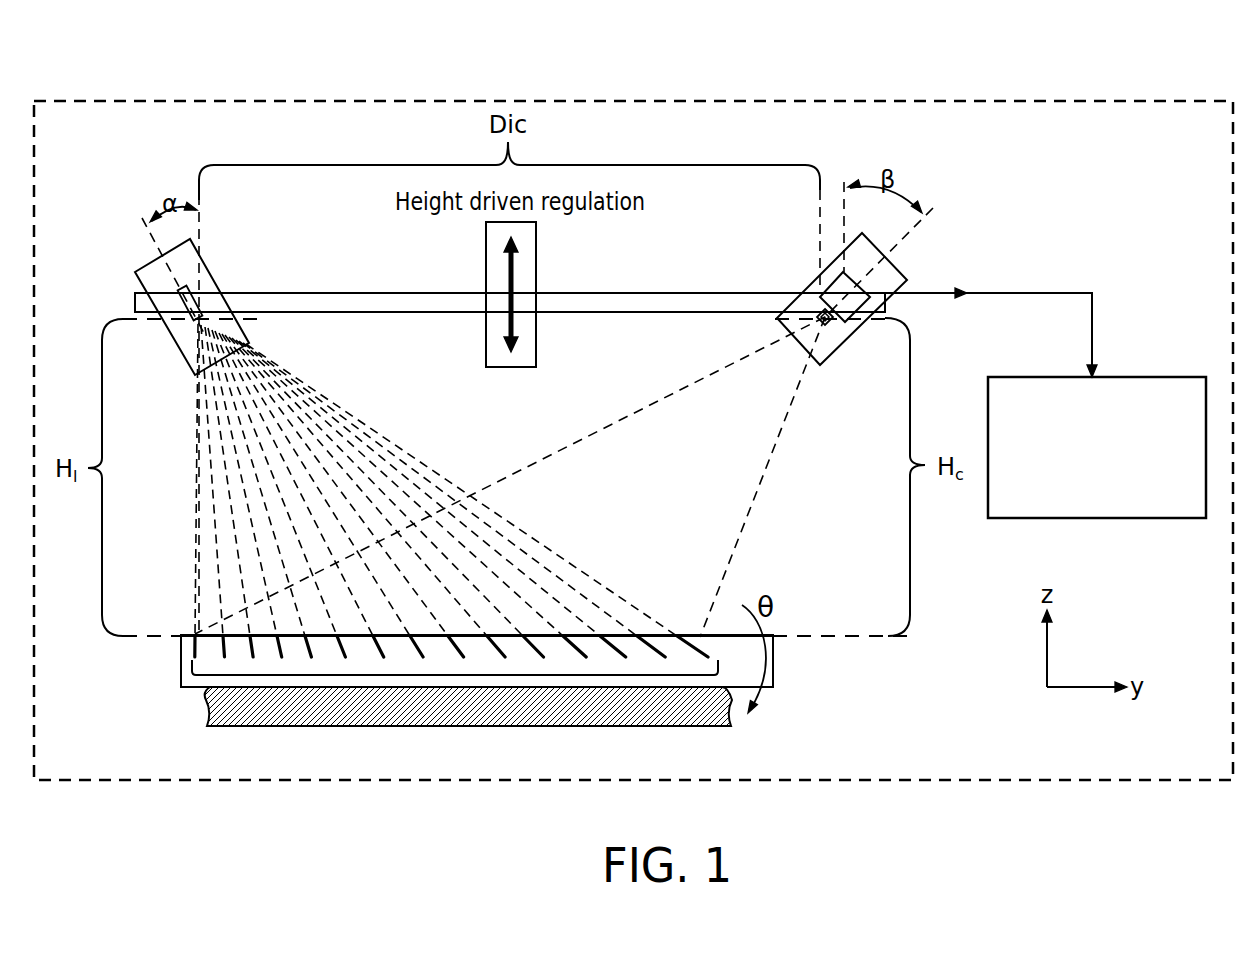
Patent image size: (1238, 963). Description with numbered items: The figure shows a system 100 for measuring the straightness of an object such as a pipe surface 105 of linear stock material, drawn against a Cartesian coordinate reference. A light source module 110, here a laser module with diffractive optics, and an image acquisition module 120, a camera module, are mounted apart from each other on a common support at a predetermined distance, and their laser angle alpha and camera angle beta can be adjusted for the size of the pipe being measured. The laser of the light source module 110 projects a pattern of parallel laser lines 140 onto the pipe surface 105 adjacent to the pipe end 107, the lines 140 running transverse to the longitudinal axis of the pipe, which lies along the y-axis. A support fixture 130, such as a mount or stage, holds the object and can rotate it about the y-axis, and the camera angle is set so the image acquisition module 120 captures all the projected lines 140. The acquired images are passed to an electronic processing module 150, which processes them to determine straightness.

The system for measuring straightness 100 is at (722, 82).
The pipe surface 105 is at (733, 648).
The pipe end 107 is at (180, 664).
The light source module 110 is at (280, 282).
The image acquisition module 120 is at (798, 282).
The support fixture 130 is at (655, 727).
The laser lines 140 is at (455, 676).
The electronic processing module 150 is at (1076, 496).